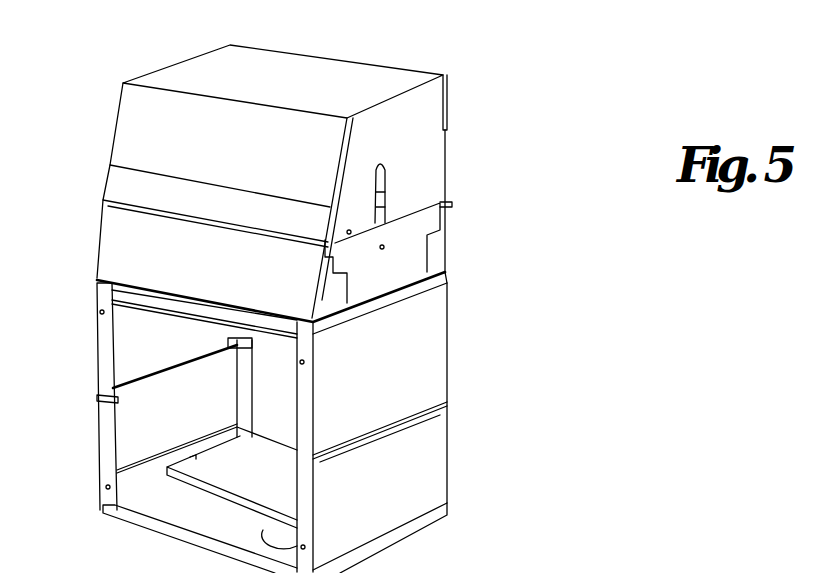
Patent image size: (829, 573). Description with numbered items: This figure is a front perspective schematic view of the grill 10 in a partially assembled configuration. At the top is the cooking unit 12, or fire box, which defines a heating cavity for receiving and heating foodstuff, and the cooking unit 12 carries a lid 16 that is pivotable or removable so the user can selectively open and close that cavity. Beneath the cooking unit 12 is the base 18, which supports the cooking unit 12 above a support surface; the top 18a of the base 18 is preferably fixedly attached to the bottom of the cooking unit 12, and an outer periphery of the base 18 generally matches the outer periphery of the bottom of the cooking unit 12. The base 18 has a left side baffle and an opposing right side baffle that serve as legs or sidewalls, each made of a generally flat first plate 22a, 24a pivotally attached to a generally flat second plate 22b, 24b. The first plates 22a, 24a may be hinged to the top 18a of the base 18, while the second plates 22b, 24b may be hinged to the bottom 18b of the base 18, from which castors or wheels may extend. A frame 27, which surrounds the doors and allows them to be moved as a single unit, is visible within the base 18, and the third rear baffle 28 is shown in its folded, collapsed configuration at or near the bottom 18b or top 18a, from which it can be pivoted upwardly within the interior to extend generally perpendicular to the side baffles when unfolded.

The grill 10 is at (565, 66).
The cooking unit 12 is at (501, 168).
The lid 16 is at (430, 126).
The base 18 is at (594, 316).
The top of the base 18a is at (105, 282).
The bottom of the base 18b is at (440, 513).
The first plate of the left side baffle 22a is at (128, 347).
The second plate of the left side baffle 22b is at (128, 418).
The first plate of the right side baffle 24a is at (425, 353).
The second plate of the right side baffle 24b is at (423, 465).
The frame 27 is at (110, 300).
The third rear baffle 28 is at (235, 470).